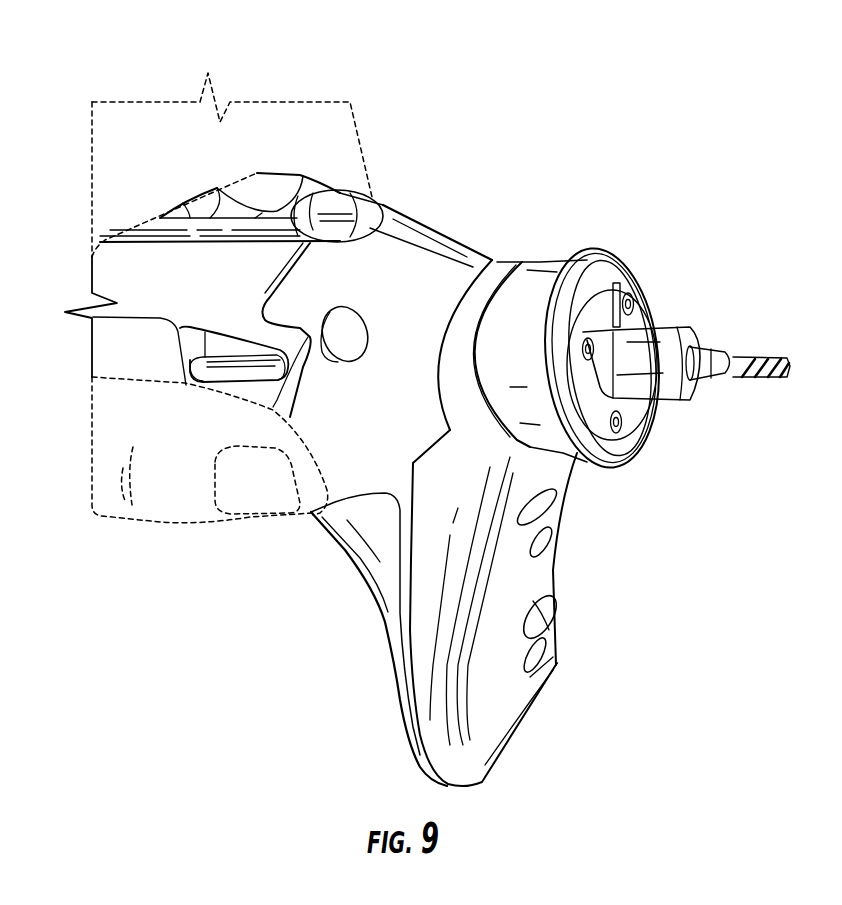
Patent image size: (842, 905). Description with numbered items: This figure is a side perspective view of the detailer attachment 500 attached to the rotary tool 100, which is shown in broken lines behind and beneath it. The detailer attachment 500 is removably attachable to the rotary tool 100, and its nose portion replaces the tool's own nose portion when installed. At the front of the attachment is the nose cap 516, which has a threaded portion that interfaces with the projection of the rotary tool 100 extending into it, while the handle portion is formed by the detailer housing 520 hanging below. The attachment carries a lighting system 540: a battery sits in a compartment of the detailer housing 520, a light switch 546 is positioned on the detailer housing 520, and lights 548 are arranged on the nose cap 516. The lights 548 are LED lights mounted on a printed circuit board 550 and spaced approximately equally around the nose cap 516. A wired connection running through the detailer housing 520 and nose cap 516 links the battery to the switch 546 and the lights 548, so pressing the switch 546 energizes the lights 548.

The rotary tool 100 is at (266, 140).
The detailer attachment 500 is at (678, 222).
The nose cap 516 is at (557, 267).
The detailer housing 520 is at (493, 710).
The lighting system 540 is at (625, 535).
The light switch 546 is at (547, 618).
The lights 548 is at (622, 424).
The printed circuit board 550 is at (631, 435).